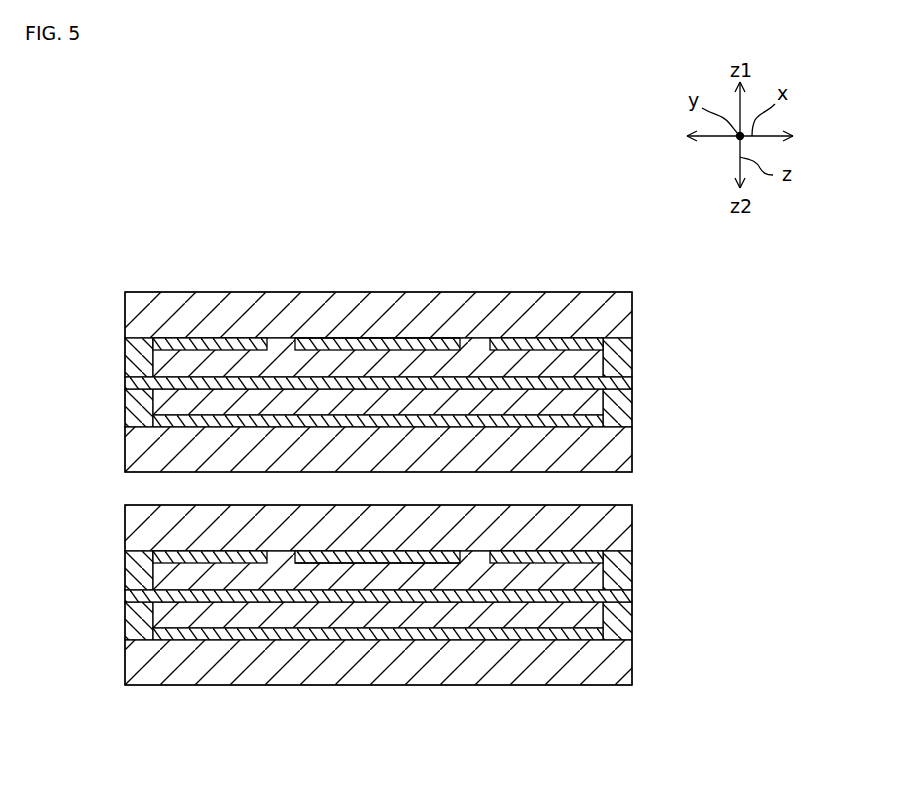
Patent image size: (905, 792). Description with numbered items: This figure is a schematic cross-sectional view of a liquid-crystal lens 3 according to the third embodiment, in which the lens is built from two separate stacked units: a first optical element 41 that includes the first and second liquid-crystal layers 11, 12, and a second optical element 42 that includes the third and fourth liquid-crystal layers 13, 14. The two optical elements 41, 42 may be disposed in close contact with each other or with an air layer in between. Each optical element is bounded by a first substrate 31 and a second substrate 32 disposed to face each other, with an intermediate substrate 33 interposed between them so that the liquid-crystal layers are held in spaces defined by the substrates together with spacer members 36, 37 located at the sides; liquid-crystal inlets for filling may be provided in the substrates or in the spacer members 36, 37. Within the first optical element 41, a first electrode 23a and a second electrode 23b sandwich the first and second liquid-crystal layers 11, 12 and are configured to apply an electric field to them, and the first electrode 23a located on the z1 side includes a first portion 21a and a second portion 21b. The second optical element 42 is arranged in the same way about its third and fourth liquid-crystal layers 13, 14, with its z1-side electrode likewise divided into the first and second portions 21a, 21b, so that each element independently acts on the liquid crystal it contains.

The liquid-crystal lens 3 is at (597, 145).
The first liquid-crystal layer 11 is at (605, 352).
The second liquid-crystal layer 12 is at (605, 400).
The third liquid-crystal layer 13 is at (605, 565).
The fourth liquid-crystal layer 14 is at (605, 612).
The first portion 21a is at (370, 345).
The second portion 21b is at (243, 345).
The first electrode 23a is at (330, 328).
The second electrode 23b is at (398, 415).
The first substrate 31 is at (634, 303).
The second substrate 32 is at (646, 457).
The intermediate substrate 33 is at (634, 382).
The spacer member 36 is at (124, 359).
The spacer member 37 is at (124, 413).
The first optical element 41 is at (567, 267).
The second optical element 42 is at (588, 703).